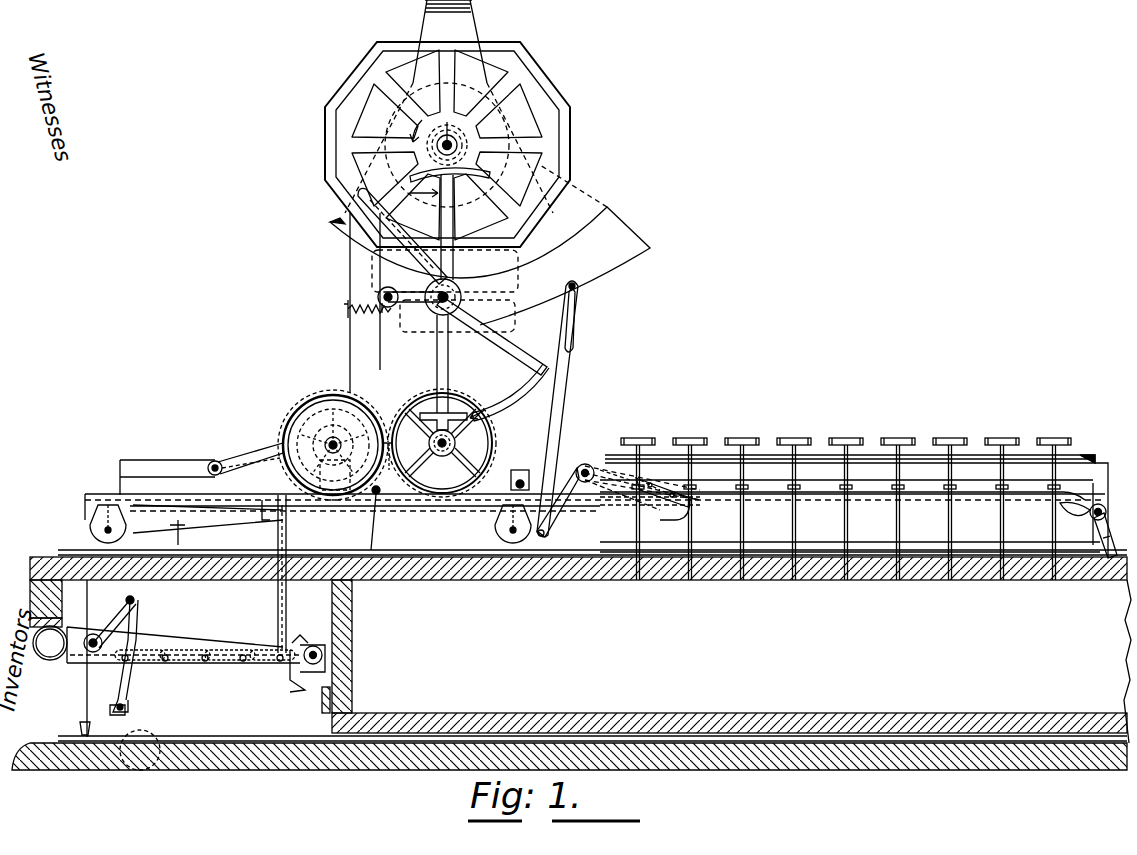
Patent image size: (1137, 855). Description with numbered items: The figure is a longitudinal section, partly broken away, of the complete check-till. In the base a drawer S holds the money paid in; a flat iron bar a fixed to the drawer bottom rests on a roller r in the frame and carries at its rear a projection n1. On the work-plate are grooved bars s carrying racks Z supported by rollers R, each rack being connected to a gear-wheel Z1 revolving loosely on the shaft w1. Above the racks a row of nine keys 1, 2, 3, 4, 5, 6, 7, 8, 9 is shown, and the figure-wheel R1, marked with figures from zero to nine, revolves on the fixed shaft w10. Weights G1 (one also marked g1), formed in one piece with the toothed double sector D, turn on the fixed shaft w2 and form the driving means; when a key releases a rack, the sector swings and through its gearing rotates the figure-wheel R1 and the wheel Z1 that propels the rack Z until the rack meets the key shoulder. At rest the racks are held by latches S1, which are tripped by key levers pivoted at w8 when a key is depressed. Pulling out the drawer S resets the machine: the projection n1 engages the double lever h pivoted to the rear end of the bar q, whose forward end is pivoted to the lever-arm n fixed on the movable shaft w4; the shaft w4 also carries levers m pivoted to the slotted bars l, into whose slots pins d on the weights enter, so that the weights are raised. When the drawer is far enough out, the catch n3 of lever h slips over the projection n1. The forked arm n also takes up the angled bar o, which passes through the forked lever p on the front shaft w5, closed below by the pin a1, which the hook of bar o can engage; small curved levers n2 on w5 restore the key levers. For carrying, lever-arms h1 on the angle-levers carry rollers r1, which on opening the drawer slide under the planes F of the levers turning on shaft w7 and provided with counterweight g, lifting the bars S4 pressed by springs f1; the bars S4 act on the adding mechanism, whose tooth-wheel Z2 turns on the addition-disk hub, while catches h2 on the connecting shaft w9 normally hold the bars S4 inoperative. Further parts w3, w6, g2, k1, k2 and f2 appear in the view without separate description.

The drawer S is at (445, 716).
The flat iron bar a is at (205, 735).
The bent bar o is at (858, 545).
The key 1 is at (638, 488).
The key 2 is at (690, 488).
The key 3 is at (742, 488).
The key 4 is at (794, 488).
The key 5 is at (846, 488).
The key 6 is at (898, 488).
The key 7 is at (950, 488).
The key 8 is at (1002, 488).
The key 9 is at (1054, 488).
The key cap g1 is at (948, 423).
The lever-arm n is at (663, 500).
The bar q is at (632, 500).
The free lever-arm h1 is at (686, 506).
The forked lever-arm p is at (930, 527).
The curved lever n2 is at (1080, 512).
The shaft w5 is at (1102, 506).
The figure-wheel R1 is at (566, 192).
The fixed shaft w10 is at (448, 132).
The toothed double sector D is at (400, 240).
The fixed shaft w2 is at (420, 305).
The spring k2 is at (398, 352).
The grooved bar s is at (425, 552).
The weight G1 is at (622, 256).
The gear-wheel Z1 is at (493, 366).
The slotted bar l is at (563, 370).
The pin d is at (578, 288).
The movable shaft w4 is at (586, 464).
The lever m is at (568, 512).
The latch S1 is at (612, 500).
The shaft w3 is at (519, 467).
The tooth-wheel Z2 is at (333, 392).
The shaft w1 is at (442, 443).
The pin a1 is at (385, 396).
The shaft w6 is at (171, 470).
The catch h2 is at (250, 459).
The rack Z is at (595, 498).
The bar g2 is at (222, 518).
The roller R is at (92, 530).
The spring f1 is at (264, 523).
The double lever h is at (136, 626).
The bar S4 is at (282, 574).
The pivot shaft w8 is at (375, 518).
The counterweight g is at (48, 660).
The lever k1 is at (206, 646).
The shaft w7 is at (93, 636).
The little roller r1 is at (185, 665).
The catch n3 is at (114, 713).
The projection n1 is at (80, 726).
The roller r is at (140, 744).
The connecting shaft w9 is at (315, 670).
The plane F is at (305, 672).
The spring f2 is at (300, 667).